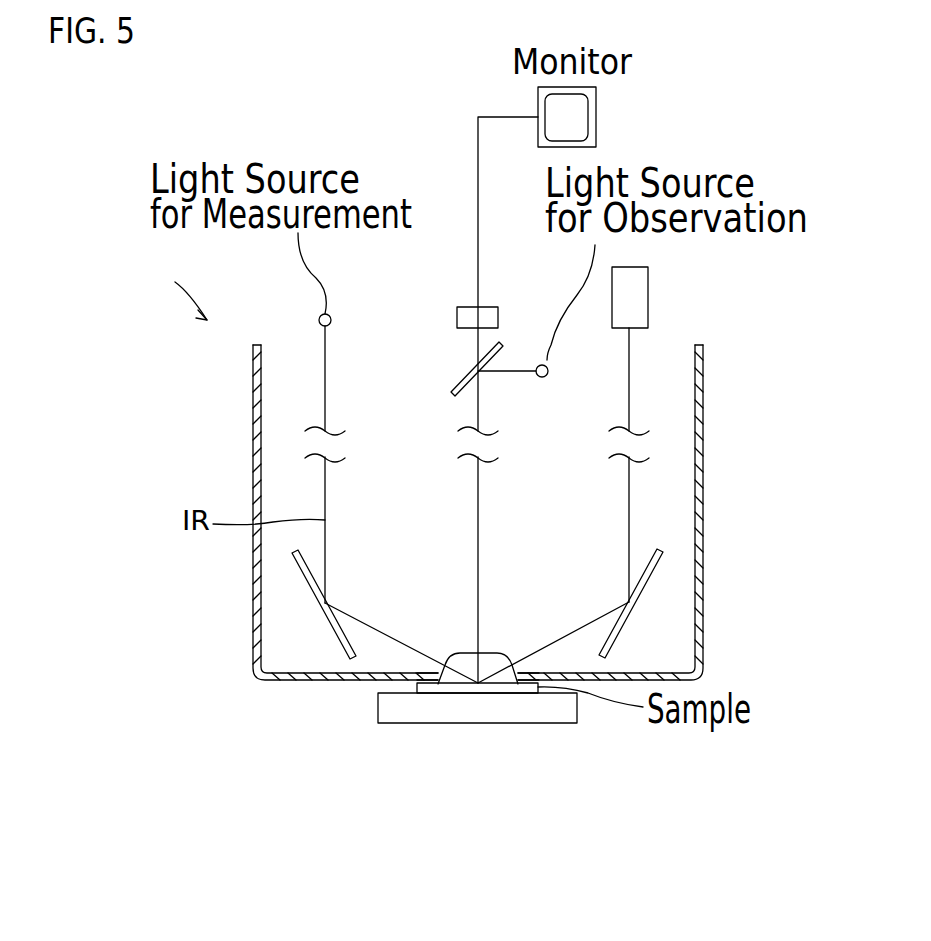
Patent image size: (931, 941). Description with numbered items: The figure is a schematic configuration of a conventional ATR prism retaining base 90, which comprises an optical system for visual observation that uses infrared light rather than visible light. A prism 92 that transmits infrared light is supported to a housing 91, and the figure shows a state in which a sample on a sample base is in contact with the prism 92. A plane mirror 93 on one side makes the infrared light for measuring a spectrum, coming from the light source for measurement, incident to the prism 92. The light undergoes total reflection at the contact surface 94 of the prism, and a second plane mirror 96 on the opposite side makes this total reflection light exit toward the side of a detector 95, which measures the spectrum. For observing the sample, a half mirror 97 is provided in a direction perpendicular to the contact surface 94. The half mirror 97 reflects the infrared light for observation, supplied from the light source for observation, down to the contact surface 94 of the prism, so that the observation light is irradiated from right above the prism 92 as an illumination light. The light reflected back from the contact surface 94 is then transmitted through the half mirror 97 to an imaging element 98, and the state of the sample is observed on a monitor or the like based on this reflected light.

The prism retaining base 90 is at (168, 291).
The housing 91 is at (255, 460).
The prism 92 is at (425, 669).
The plane mirror 93 is at (300, 581).
The contact surface 94 is at (452, 693).
The detector 95 is at (648, 280).
The plane mirror 96 is at (653, 580).
The half mirror 97 is at (463, 377).
The imaging element 98 is at (498, 312).